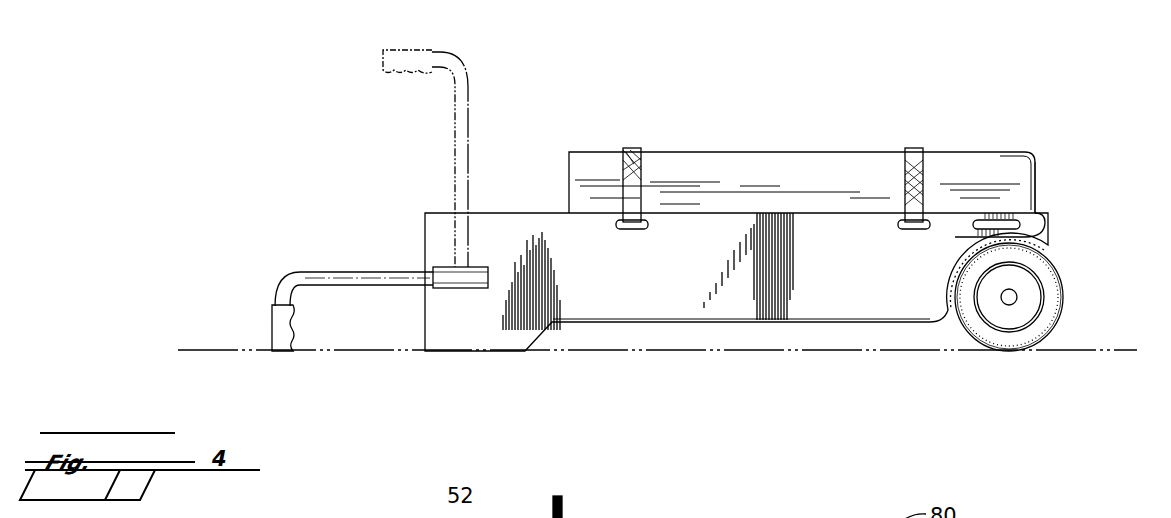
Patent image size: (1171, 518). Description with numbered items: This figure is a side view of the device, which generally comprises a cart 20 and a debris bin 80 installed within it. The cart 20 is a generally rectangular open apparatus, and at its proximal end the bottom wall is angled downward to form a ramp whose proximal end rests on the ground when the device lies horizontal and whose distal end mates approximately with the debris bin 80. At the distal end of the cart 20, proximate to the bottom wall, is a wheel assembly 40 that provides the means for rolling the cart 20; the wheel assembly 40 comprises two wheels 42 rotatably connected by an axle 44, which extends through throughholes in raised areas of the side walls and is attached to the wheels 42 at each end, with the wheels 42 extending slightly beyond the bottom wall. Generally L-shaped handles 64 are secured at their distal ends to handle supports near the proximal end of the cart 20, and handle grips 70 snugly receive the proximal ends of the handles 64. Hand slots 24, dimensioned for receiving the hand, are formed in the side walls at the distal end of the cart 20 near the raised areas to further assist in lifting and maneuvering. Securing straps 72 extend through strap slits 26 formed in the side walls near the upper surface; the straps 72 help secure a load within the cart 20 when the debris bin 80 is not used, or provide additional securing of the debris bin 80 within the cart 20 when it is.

The cart 20 is at (585, 332).
The hand slots 24 is at (1003, 216).
The strap slits 26 is at (648, 220).
The wheel assembly 40 is at (1103, 312).
The wheels 42 is at (1025, 338).
The axle 44 is at (1011, 296).
The handles 64 is at (337, 275).
The handle grips 70 is at (275, 320).
The securing straps 72 is at (632, 168).
The debris bin 80 is at (1040, 175).